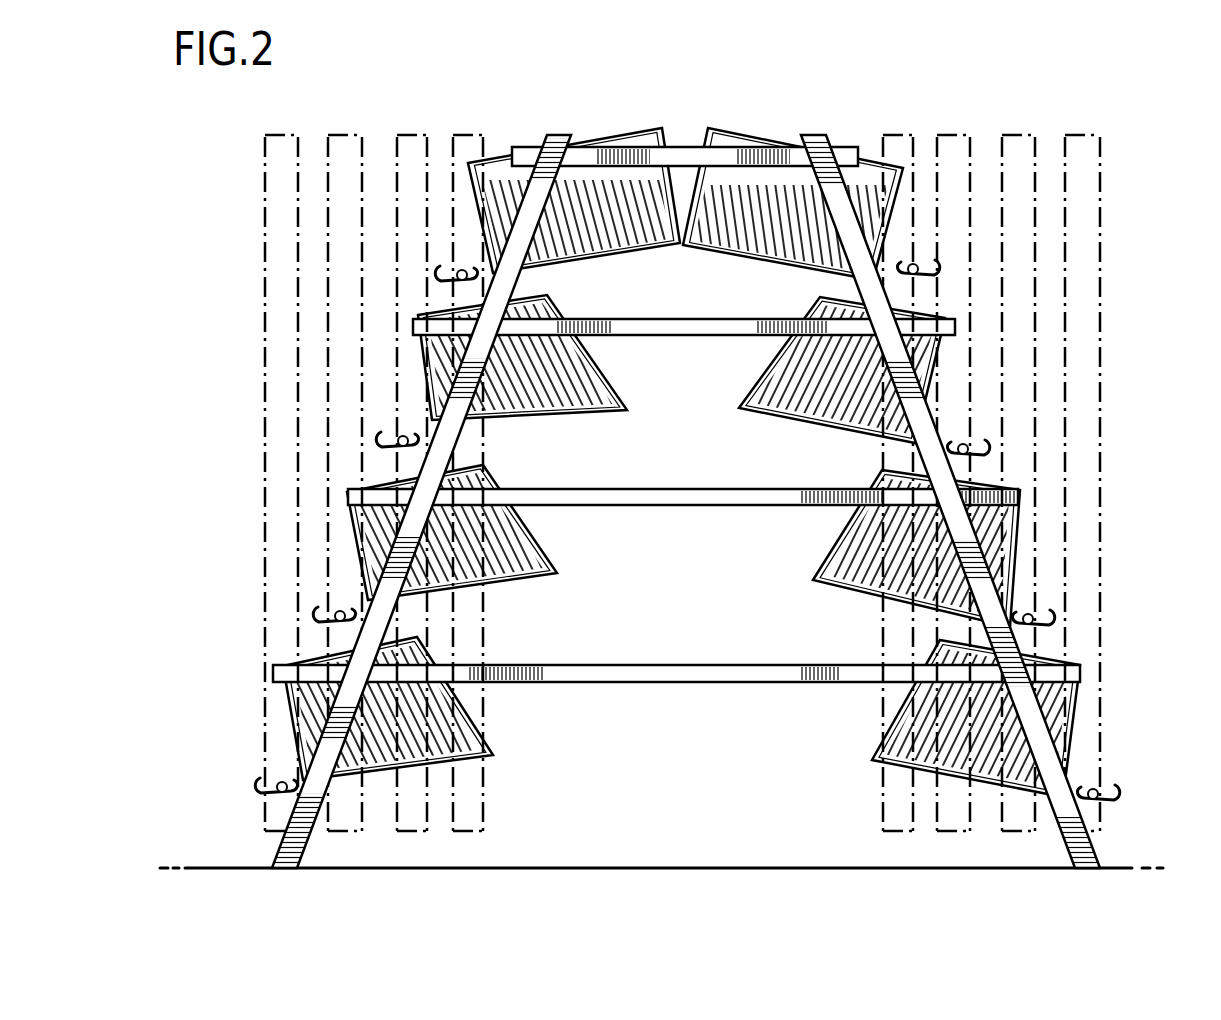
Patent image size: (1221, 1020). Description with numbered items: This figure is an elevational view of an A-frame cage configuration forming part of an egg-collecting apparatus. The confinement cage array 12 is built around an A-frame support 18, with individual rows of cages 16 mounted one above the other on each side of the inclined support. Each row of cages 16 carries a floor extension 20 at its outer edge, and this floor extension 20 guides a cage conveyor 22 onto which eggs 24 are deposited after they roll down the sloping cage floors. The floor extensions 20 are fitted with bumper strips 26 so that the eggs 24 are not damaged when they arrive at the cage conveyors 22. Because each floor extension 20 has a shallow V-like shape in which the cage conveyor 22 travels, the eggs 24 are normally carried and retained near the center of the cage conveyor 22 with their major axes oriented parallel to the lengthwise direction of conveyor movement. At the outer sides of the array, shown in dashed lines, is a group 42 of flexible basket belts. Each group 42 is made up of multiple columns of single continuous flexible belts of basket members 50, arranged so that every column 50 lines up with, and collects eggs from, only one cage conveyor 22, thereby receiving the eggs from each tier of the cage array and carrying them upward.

The confinement cage array 12 is at (752, 116).
The row of cages 16 is at (588, 260).
The A-frame support 18 is at (546, 147).
The floor extension 20 is at (378, 440).
The cage conveyor 22 is at (677, 516).
The egg 24 is at (270, 775).
The bumper strip 26 is at (390, 427).
The group of flexible basket belts 42 is at (265, 668).
The continuous flexible belt of basket members 50 is at (334, 128).